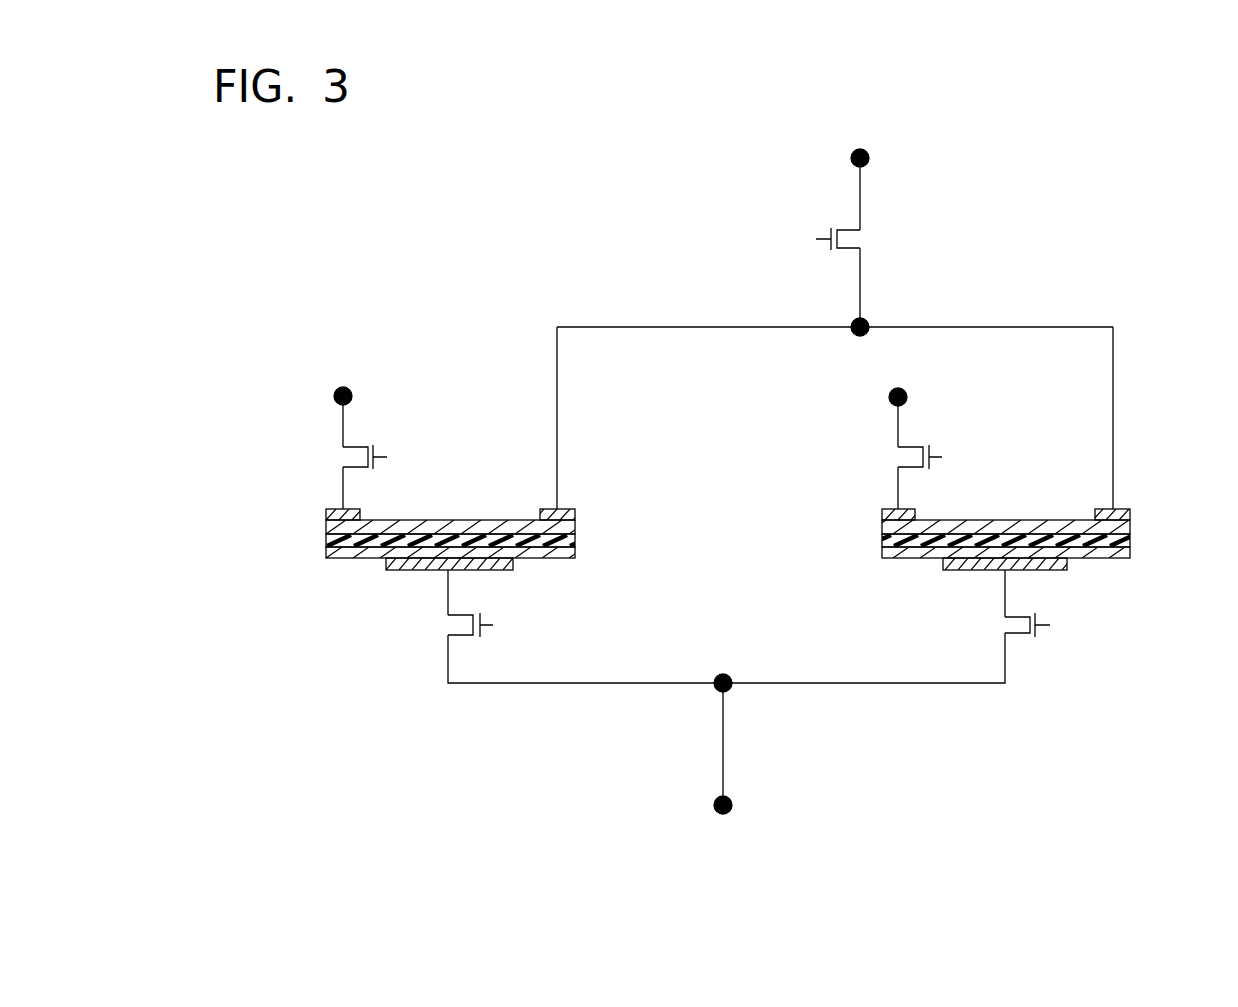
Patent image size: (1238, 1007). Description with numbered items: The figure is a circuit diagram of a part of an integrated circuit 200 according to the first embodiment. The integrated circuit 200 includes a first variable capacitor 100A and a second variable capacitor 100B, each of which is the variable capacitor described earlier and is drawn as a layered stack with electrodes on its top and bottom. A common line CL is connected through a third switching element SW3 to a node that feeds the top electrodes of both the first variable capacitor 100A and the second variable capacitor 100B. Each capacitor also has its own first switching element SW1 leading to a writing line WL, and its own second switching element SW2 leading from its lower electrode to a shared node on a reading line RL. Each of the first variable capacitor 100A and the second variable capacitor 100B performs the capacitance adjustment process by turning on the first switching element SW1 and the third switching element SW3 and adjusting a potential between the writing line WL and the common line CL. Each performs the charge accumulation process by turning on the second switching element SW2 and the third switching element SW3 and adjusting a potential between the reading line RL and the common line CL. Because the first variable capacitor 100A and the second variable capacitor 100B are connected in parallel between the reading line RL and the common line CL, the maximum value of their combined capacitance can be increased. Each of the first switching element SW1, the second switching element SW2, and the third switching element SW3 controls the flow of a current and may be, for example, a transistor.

The integrated circuit 200 is at (1172, 244).
The common line CL is at (851, 157).
The writing line WL is at (335, 395).
The reading line RL is at (732, 804).
The first switching element SW1 is at (336, 456).
The second switching element SW2 is at (499, 632).
The third switching element SW3 is at (870, 240).
The first variable capacitor 100A is at (452, 503).
The second variable capacitor 100B is at (1005, 503).